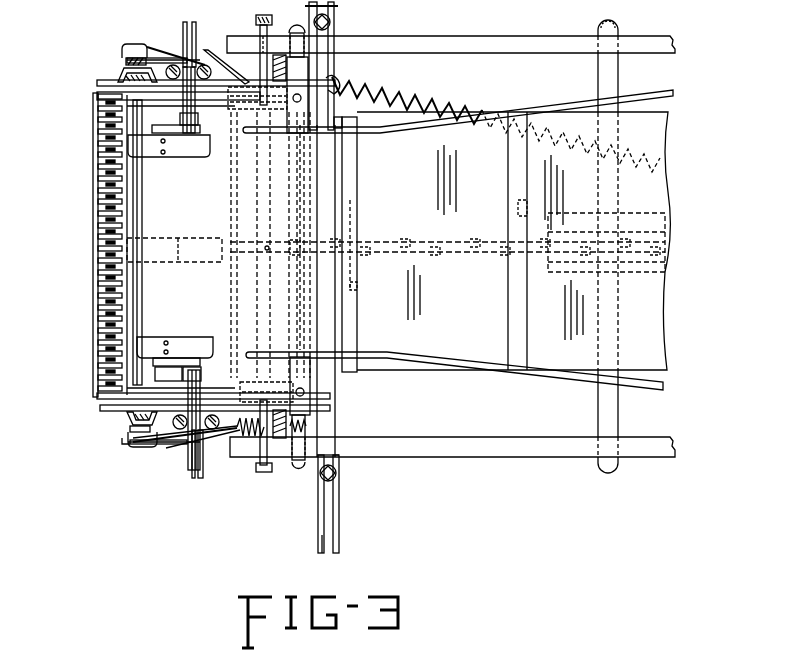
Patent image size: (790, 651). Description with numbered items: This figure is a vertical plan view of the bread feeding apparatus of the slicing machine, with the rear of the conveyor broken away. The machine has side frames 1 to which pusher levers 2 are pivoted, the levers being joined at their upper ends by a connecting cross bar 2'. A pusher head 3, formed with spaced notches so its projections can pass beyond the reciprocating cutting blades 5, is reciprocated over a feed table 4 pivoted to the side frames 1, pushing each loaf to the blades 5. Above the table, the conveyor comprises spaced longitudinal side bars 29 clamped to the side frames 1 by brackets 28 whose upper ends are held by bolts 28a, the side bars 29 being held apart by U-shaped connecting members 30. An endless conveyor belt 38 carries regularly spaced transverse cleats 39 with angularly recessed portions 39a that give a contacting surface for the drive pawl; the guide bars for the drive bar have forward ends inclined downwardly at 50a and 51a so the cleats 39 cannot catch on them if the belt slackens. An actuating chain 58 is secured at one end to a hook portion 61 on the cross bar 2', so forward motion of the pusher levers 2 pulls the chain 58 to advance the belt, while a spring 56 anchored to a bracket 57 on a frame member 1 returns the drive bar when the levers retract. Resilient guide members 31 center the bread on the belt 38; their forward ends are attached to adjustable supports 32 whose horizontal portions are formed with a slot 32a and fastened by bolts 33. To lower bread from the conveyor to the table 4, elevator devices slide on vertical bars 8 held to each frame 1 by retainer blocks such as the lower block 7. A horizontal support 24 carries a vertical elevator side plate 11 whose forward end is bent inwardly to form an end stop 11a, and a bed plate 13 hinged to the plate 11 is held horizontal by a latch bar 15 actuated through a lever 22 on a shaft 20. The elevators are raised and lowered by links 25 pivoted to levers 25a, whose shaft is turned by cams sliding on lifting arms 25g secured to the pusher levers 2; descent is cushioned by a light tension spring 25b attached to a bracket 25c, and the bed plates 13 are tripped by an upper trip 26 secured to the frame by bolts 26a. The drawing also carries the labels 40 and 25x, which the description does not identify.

The side frames 1 is at (118, 82).
The pusher levers 2 is at (216, 245).
The connecting cross bar 2' is at (317, 237).
The pusher head 3 is at (95, 265).
The feed table 4 is at (174, 215).
The reciprocating cutting blades 5 is at (96, 182).
The lower retainer block 7 is at (160, 60).
The vertical bars 8 is at (180, 64).
The elevator side plate 11 is at (201, 368).
The end stop 11a is at (137, 160).
The bed plate 13 is at (196, 158).
The latch bar 15 is at (168, 134).
The shaft 20 is at (207, 480).
The lever 22 is at (176, 248).
The horizontal support 24 is at (183, 30).
The links 25 is at (124, 52).
The levers 25a is at (227, 55).
The tension spring 25b is at (250, 440).
The bracket 25c is at (222, 246).
The lifting arms 25g is at (201, 291).
The rod 25x is at (268, 218).
The upper trip 26 is at (132, 46).
The bolts 26a is at (128, 448).
The brackets 28 is at (261, 34).
The bolts 28a is at (280, 490).
The side bars 29 is at (430, 46).
The U-shaped connecting members 30 is at (297, 32).
The guide members 31 is at (381, 135).
The slot 32a is at (326, 7).
The adjustable supports 32 is at (336, 32).
The bolts 33 is at (331, 22).
The conveyor belt 38 is at (513, 241).
The cleats 39 is at (358, 188).
The angularly recessed portions 39a is at (360, 217).
The block 40 is at (245, 95).
The downwardly inclined forward end of guide bar 50a is at (563, 218).
The downwardly inclined forward end of guide bar 51a is at (560, 275).
The spring 56 is at (420, 102).
The bracket 57 is at (330, 88).
The actuating chain 58 is at (465, 260).
The hook portion 61 is at (312, 262).